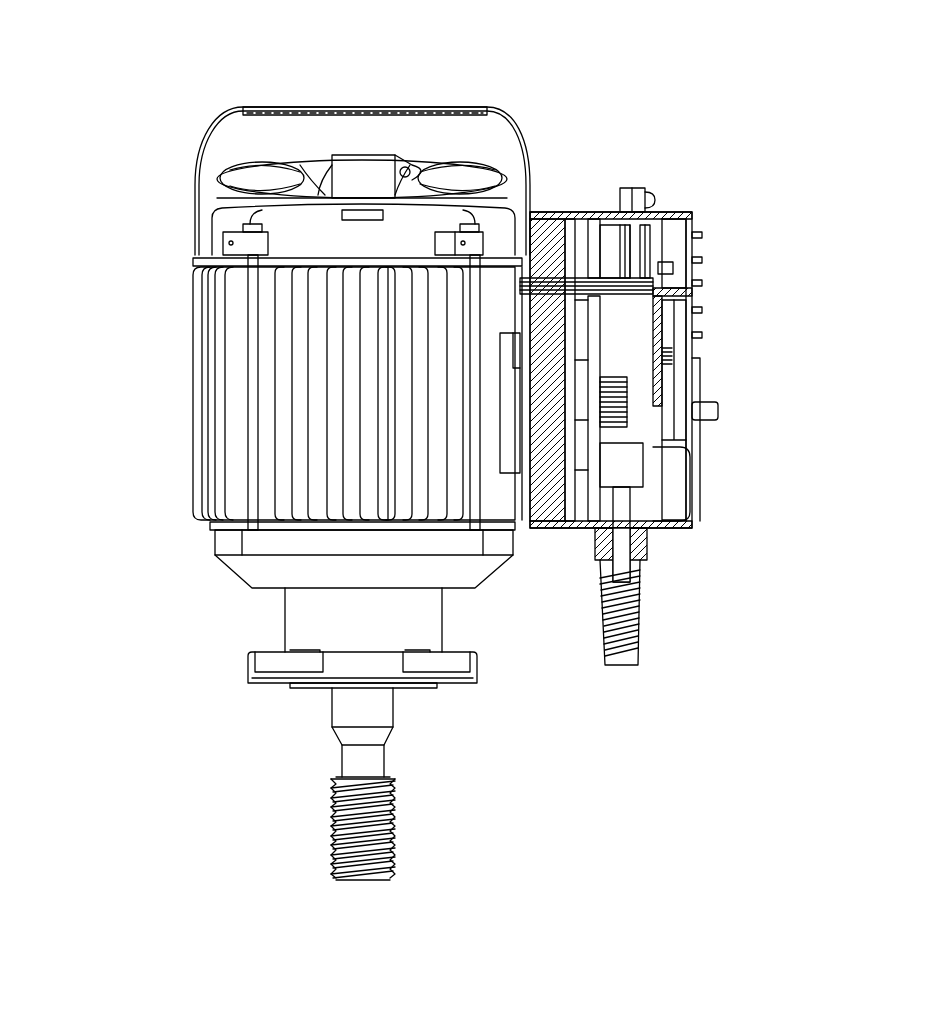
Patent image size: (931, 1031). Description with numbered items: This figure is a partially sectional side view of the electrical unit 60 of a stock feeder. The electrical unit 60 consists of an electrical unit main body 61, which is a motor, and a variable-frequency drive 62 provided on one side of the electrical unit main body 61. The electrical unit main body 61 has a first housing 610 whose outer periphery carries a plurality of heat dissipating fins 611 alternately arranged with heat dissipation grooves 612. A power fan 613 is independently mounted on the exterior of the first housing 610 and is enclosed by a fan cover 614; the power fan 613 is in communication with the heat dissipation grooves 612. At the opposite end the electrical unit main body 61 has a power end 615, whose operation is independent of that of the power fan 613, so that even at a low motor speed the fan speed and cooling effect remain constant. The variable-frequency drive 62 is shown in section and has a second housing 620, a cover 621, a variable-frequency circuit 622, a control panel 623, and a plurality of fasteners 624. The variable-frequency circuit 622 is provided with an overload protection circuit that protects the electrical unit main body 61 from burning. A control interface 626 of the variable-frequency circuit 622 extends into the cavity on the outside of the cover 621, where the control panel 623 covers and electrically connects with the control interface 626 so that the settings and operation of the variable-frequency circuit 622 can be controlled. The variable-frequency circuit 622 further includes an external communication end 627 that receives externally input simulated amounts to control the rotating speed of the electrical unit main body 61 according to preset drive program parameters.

The electrical unit 60 is at (150, 255).
The electrical unit main body 61 is at (222, 585).
The first housing 610 is at (220, 540).
The heat dissipating fins 611 is at (227, 387).
The heat dissipation grooves 612 is at (357, 393).
The power fan 613 is at (450, 170).
The fan cover 614 is at (268, 107).
The power end 615 is at (355, 825).
The variable-frequency drive 62 is at (563, 560).
The second housing 620 is at (555, 217).
The cover 621 is at (697, 218).
The variable-frequency circuit 622 is at (607, 208).
The control panel 623 is at (672, 387).
The fasteners 624 is at (648, 200).
The control interface 626 is at (672, 345).
The external communication end 627 is at (673, 263).